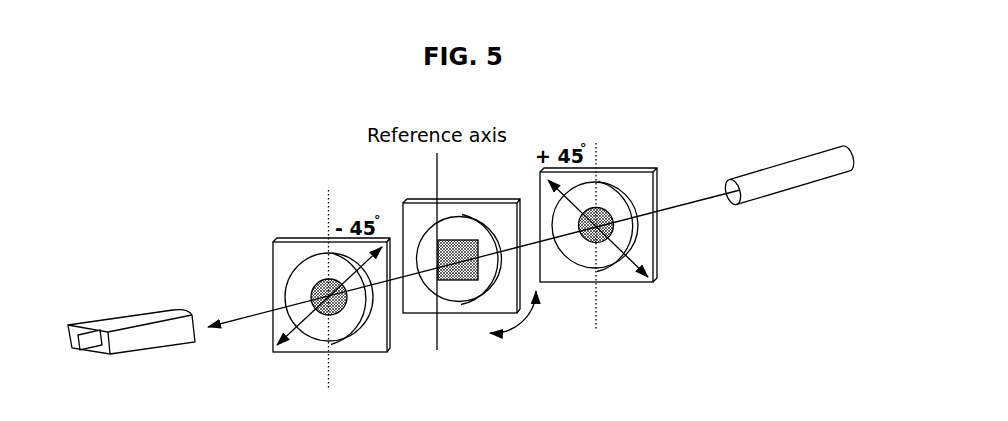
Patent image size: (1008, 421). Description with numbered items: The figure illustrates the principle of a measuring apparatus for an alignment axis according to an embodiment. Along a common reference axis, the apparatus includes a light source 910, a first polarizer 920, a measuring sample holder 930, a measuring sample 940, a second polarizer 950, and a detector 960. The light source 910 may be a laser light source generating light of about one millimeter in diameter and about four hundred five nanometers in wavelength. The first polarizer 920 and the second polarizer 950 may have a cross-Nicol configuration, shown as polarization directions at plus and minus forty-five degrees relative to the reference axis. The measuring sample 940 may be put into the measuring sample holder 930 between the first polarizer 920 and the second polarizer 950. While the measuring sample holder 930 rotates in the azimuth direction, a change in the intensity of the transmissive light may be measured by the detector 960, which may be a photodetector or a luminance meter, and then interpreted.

The light source 910 is at (787, 175).
The first polarizer 920 is at (600, 265).
The measuring sample holder 930 is at (407, 210).
The measuring sample 940 is at (450, 242).
The second polarizer 950 is at (340, 333).
The detector 960 is at (135, 322).